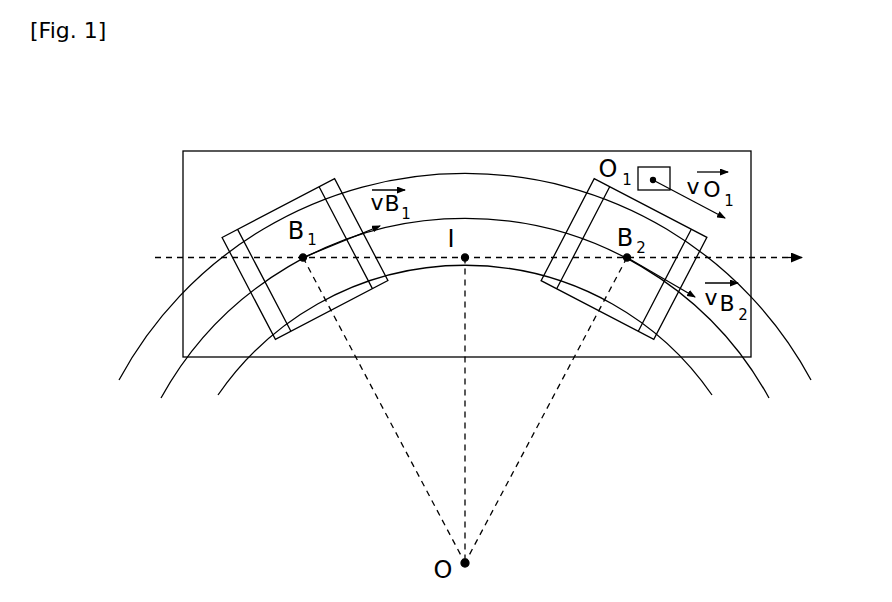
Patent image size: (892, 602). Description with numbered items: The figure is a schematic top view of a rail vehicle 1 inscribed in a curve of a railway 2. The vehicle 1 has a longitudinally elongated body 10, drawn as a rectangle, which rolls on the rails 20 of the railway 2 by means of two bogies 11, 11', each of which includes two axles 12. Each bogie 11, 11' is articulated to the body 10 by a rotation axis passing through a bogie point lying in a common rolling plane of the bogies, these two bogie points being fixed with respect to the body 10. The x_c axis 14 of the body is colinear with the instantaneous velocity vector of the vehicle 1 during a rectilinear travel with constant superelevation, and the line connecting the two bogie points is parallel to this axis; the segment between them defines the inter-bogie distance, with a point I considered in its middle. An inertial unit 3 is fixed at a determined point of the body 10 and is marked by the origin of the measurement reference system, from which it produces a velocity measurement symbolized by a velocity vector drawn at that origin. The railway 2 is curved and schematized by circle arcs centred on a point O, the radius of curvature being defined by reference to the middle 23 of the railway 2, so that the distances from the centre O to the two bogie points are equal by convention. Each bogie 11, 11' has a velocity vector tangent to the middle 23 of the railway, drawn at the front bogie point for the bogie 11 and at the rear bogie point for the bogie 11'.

The vehicle 1 is at (277, 140).
The railway 2 is at (717, 404).
The inertial unit 3 is at (645, 167).
The body 10 is at (257, 364).
The bogie 11 is at (305, 305).
The bogie 11' is at (564, 137).
The axle 12 is at (631, 332).
The x_c axis 14 is at (773, 254).
The rails 20 is at (722, 392).
The middle of the railway 23 is at (173, 384).